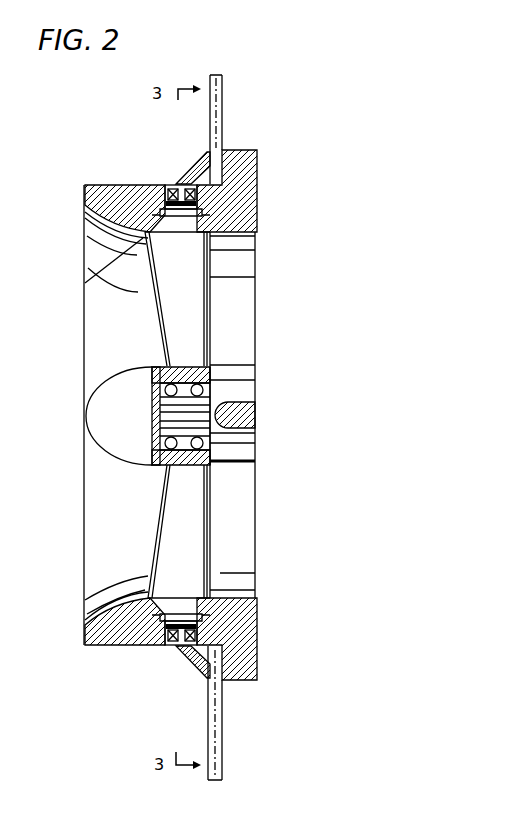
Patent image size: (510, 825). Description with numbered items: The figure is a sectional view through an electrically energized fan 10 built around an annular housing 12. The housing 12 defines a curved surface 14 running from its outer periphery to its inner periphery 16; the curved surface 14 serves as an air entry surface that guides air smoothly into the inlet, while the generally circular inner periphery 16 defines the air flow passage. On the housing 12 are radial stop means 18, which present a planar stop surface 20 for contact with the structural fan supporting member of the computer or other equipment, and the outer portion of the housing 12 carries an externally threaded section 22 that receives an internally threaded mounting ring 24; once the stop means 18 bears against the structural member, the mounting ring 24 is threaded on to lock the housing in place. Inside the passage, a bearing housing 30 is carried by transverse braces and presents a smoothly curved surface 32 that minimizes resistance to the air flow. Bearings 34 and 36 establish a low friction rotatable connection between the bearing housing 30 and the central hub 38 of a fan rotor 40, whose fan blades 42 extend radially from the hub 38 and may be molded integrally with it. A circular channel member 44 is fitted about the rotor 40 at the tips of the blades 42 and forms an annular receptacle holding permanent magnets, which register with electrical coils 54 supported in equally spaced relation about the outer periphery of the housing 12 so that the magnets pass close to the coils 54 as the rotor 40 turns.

The electrically energized fan 10 is at (35, 173).
The annular housing 12 is at (105, 184).
The curved surface 14 is at (85, 231).
The inner periphery 16 is at (85, 283).
The radial stop means 18 is at (183, 180).
The planar stop surface 20 is at (230, 688).
The externally threaded section 22 is at (258, 659).
The mounting ring 24 is at (243, 152).
The bearing housing 30 is at (247, 449).
The smoothly curved surface 32 is at (90, 448).
The bearing 34 is at (158, 470).
The bearing 36 is at (212, 475).
The central hub 38 is at (160, 366).
The fan rotor 40 is at (213, 338).
The fan blades 42 is at (162, 547).
The circular channel member 44 is at (112, 646).
The electrical coils 54 is at (165, 652).